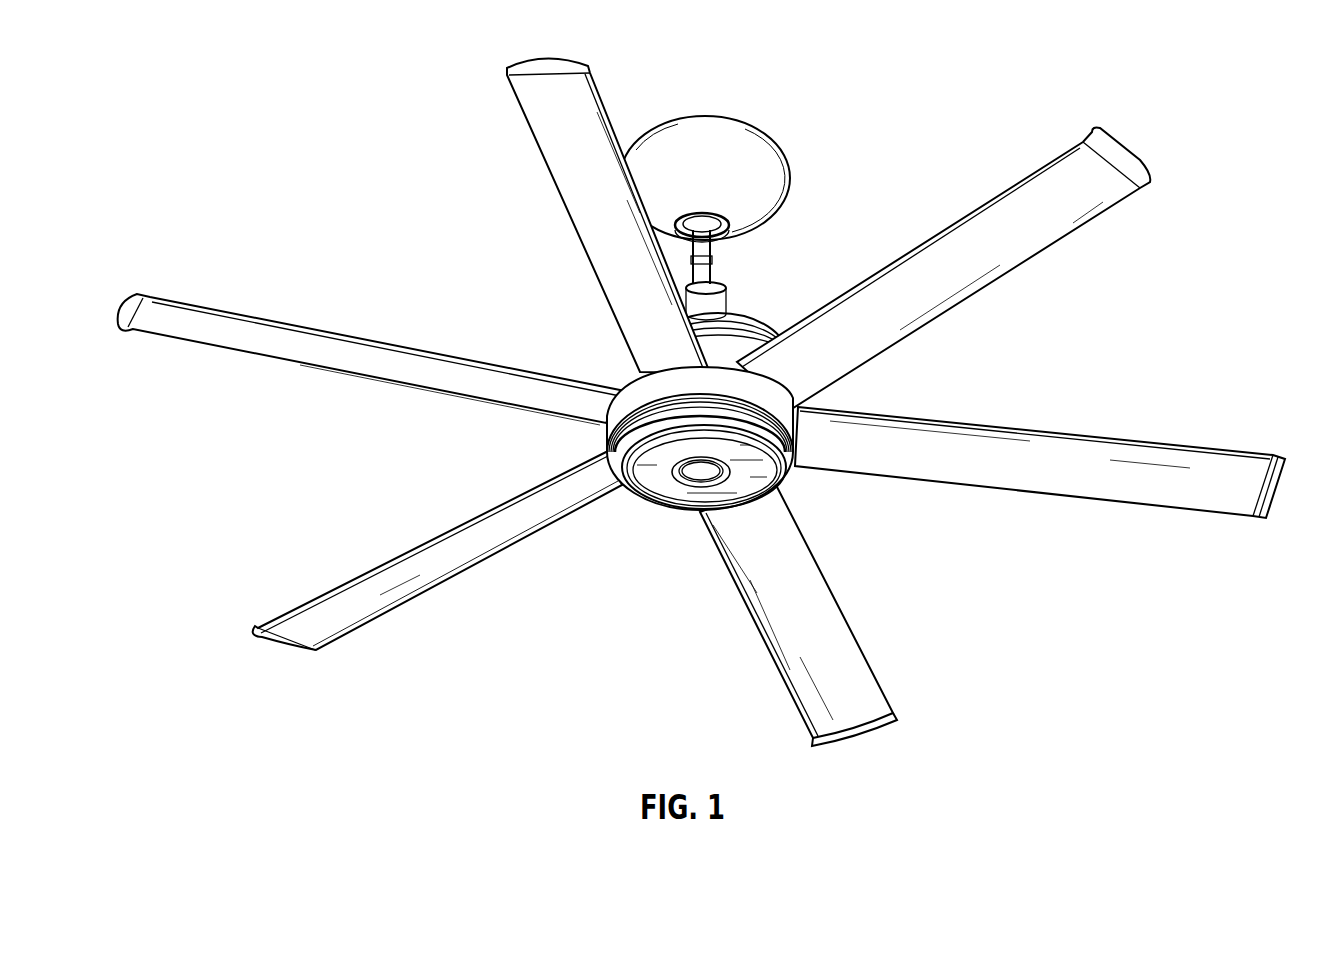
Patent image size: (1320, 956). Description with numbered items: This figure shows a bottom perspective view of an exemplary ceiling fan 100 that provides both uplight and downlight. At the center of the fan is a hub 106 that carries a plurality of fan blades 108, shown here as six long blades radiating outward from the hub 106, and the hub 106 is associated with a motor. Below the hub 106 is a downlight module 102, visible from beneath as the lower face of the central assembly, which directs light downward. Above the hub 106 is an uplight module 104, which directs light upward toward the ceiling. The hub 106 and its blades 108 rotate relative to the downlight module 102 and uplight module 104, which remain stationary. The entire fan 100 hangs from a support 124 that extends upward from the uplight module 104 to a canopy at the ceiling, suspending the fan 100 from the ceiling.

The ceiling fan 100 is at (701, 402).
The downlight module 102 is at (668, 473).
The uplight module 104 is at (740, 314).
The hub 106 is at (625, 378).
The fan blades 108 is at (1064, 224).
The support 124 is at (711, 243).